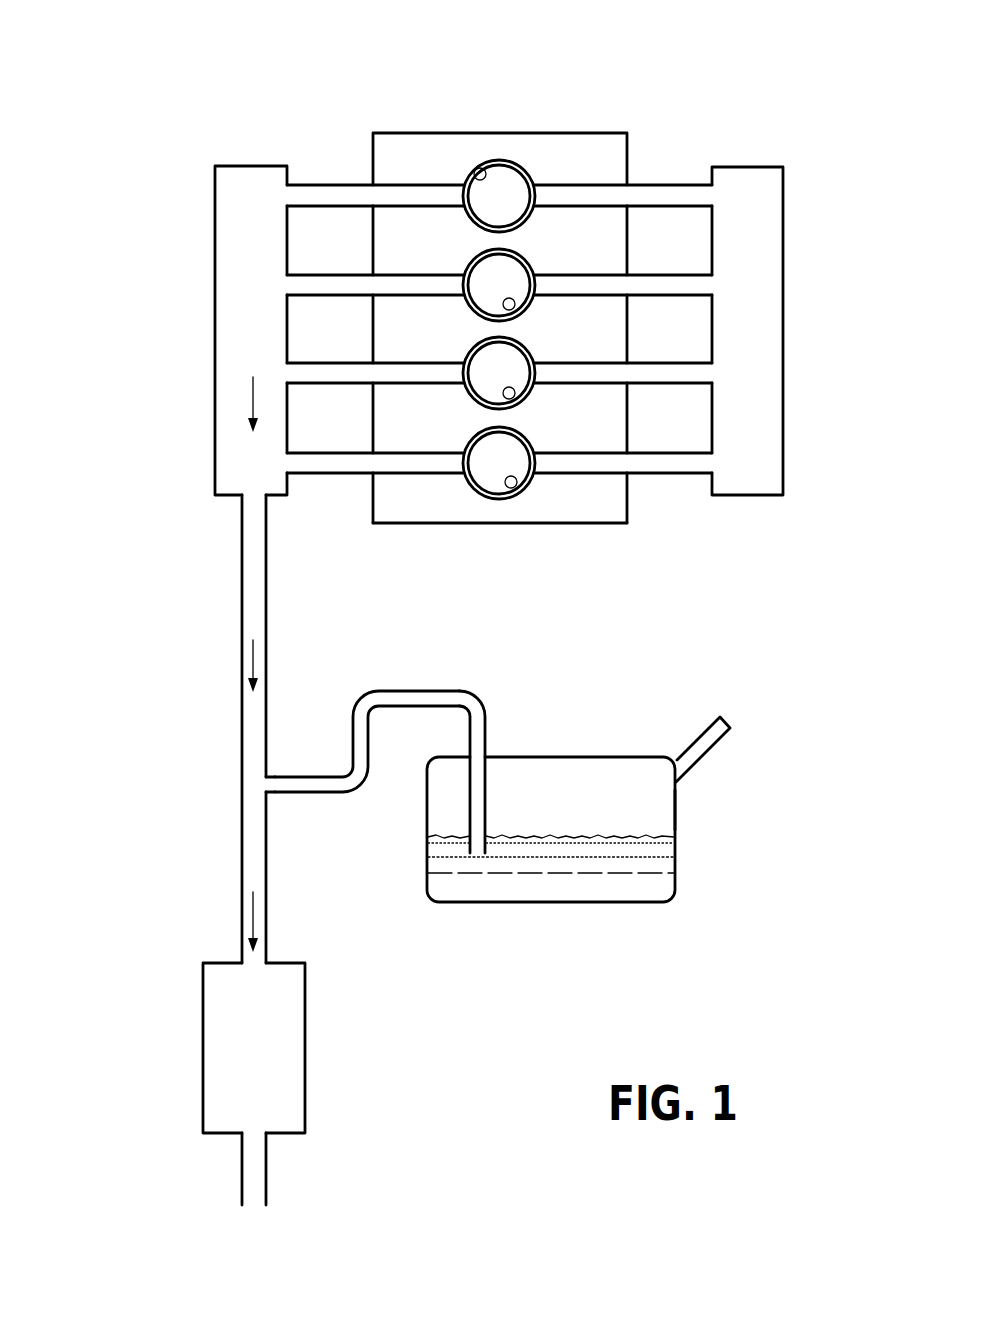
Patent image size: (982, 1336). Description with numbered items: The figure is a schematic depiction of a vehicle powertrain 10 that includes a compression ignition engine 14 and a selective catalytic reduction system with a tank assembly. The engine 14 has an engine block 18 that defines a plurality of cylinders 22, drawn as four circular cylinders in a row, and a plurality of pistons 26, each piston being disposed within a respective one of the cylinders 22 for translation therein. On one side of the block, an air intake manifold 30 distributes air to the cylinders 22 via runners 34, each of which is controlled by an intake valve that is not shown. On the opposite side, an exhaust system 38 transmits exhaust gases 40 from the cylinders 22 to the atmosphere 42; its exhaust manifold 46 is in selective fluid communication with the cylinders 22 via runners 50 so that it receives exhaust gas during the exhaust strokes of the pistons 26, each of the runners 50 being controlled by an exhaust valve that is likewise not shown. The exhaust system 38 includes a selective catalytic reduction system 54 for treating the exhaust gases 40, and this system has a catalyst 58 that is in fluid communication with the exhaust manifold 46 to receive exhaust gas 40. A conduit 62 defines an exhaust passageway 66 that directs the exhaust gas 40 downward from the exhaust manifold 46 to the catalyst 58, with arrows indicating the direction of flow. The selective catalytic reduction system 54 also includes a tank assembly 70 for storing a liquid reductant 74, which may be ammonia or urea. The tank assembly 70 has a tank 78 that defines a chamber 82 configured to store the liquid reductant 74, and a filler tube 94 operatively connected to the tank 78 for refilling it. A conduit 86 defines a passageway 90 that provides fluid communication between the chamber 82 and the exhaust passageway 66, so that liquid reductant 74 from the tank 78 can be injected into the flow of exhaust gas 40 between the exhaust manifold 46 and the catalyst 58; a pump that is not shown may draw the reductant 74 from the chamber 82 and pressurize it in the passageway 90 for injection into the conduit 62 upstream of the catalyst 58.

The vehicle powertrain 10 is at (298, 60).
The compression ignition engine 14 is at (565, 133).
The engine block 18 is at (585, 523).
The cylinders 22 is at (476, 170).
The pistons 26 is at (499, 190).
The air intake manifold 30 is at (786, 175).
The runners 34 is at (672, 185).
The exhaust system 38 is at (178, 1075).
The exhaust gases 40 is at (253, 400).
The atmosphere 42 is at (259, 1269).
The exhaust manifold 46 is at (215, 248).
The runners 50 is at (410, 185).
The selective catalytic reduction system 54 is at (462, 967).
The catalyst 58 is at (308, 1063).
The conduit 62 is at (242, 598).
The exhaust passageway 66 is at (249, 809).
The tank assembly 70 is at (650, 910).
The liquid reductant 74 is at (650, 864).
The tank 78 is at (678, 810).
The chamber 82 is at (562, 795).
The conduit 86 is at (303, 777).
The passageway 90 is at (487, 722).
The filler tube 94 is at (694, 740).